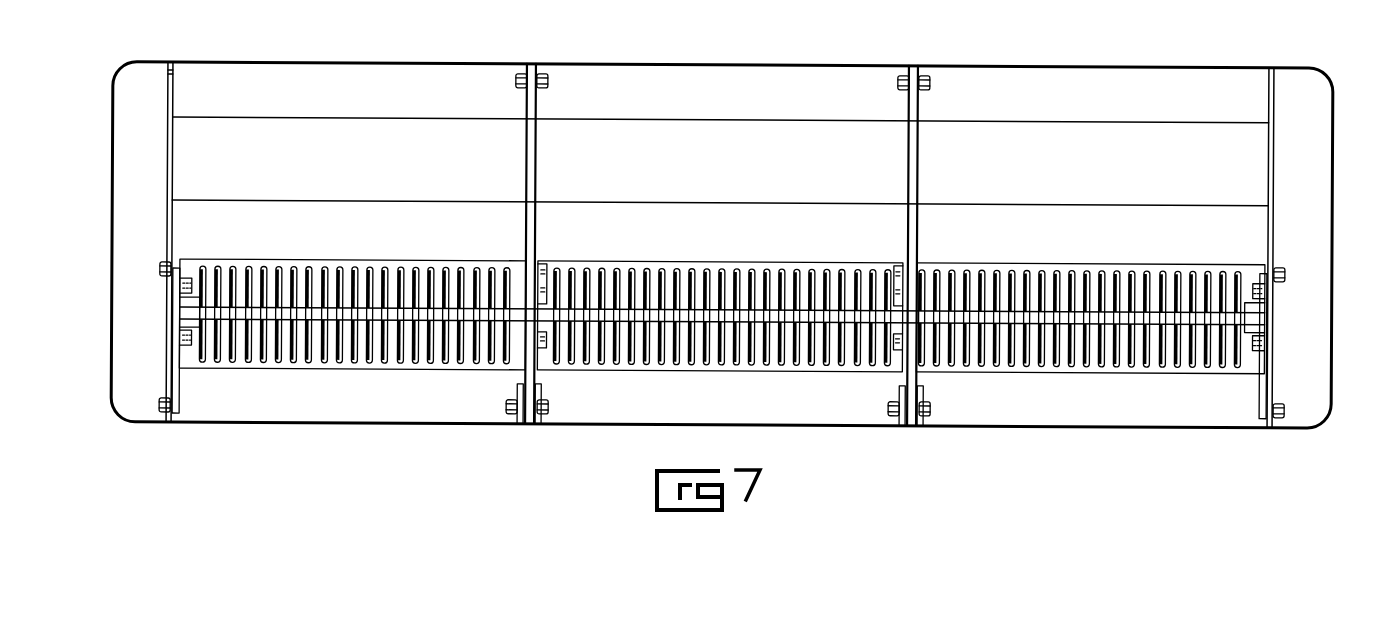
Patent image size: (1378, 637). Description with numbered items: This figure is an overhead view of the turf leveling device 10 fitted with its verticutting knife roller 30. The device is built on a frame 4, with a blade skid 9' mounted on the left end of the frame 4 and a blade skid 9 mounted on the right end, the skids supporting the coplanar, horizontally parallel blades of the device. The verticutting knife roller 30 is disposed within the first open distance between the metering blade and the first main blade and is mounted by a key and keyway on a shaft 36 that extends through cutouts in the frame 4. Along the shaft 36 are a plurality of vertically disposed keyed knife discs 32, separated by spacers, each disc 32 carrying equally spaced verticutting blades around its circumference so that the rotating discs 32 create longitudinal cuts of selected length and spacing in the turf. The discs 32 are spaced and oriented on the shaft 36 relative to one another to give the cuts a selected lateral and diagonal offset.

The heat exchanger apparatus housing 10 is at (1025, 92).
The frame 4 is at (530, 155).
The blade skid 9 is at (1308, 248).
The blade skid 9' is at (131, 242).
The verticutting knife roller 30 is at (970, 360).
The keyed knife disc 32 is at (736, 283).
The shaft 36 is at (1065, 320).